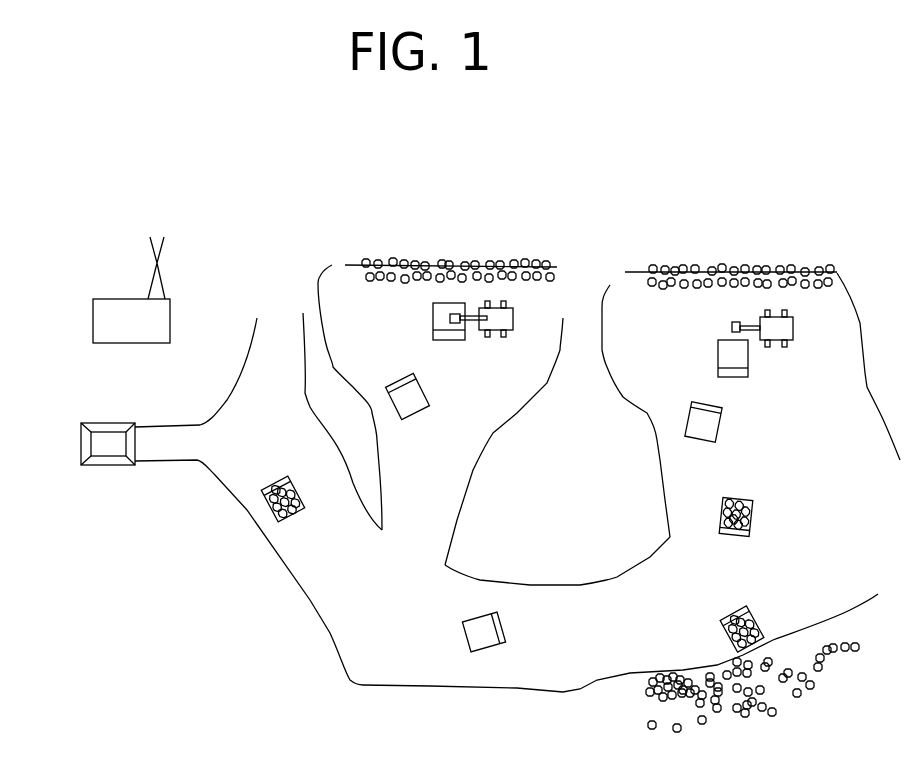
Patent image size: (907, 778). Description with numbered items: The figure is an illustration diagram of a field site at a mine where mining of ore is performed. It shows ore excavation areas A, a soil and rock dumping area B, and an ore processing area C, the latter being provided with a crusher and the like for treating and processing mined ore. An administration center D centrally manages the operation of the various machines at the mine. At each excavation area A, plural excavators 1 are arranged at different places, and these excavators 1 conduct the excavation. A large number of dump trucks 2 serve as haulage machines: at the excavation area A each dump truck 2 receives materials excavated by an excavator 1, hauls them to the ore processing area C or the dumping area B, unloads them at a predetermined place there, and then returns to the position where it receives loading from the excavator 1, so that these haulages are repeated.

The excavator 1 is at (497, 337).
The dump truck 2 is at (433, 315).
The ore excavation area A is at (587, 306).
The soil and rock dumping area B is at (752, 667).
The ore processing area C is at (108, 461).
The administration center D is at (131, 290).